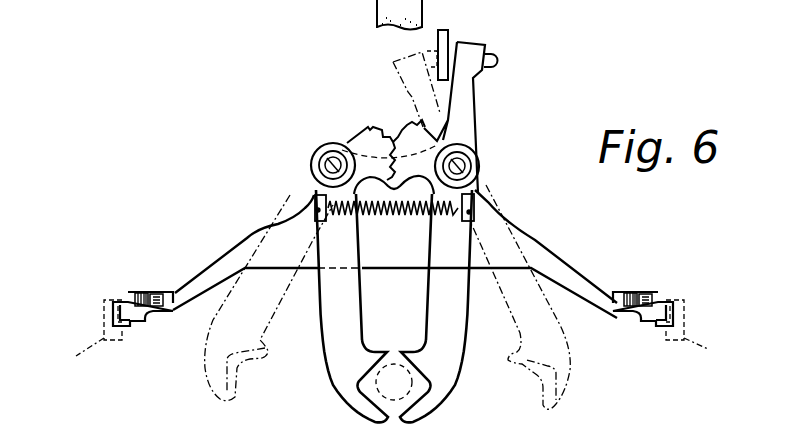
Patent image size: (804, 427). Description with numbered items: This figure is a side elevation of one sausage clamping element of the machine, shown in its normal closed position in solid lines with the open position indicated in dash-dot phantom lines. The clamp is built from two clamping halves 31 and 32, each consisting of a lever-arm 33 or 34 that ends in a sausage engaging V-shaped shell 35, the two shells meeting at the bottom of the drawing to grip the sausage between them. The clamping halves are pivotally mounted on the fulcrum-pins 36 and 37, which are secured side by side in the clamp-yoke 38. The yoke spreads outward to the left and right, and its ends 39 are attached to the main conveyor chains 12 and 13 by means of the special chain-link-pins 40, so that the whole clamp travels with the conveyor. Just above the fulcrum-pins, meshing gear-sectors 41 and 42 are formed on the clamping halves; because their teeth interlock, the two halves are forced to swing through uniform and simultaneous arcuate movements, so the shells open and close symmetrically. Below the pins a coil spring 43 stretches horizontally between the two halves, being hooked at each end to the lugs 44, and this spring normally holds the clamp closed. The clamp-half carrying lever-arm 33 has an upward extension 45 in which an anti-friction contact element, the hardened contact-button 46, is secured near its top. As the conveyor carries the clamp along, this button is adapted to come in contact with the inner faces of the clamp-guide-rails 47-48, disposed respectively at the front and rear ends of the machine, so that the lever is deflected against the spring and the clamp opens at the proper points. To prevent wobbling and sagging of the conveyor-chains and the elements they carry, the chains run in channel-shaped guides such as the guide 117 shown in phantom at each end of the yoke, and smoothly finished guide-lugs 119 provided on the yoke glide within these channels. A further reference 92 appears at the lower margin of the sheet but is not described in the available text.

The main conveyor chain 12 is at (144, 290).
The main conveyor chain 13 is at (631, 290).
The clamping half 31 is at (443, 407).
The clamping half 32 is at (335, 398).
The lever-arm 33 is at (454, 358).
The lever-arm 34 is at (326, 328).
The sausage engaging V-shaped shell 35 is at (409, 370).
The fulcrum-pin 36 is at (472, 167).
The fulcrum-pin 37 is at (313, 151).
The clamp-yoke 38 is at (223, 256).
The end of clamp-yoke 39 is at (153, 324).
The special chain-link-pin 40 is at (158, 292).
The gear-sector 41 is at (420, 137).
The gear-sector 42 is at (368, 138).
The coil spring 43 is at (405, 222).
The lug 44 is at (318, 200).
The extension 45 is at (480, 91).
The hardened contact-button 46 is at (498, 60).
The clamp-guide-rails 47-48 is at (447, 40).
The support 92 is at (52, 417).
The channel-shaped guide 117 is at (396, 357).
The guide-lug 119 is at (118, 306).